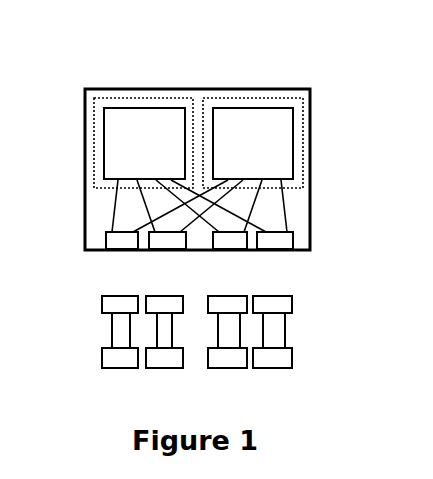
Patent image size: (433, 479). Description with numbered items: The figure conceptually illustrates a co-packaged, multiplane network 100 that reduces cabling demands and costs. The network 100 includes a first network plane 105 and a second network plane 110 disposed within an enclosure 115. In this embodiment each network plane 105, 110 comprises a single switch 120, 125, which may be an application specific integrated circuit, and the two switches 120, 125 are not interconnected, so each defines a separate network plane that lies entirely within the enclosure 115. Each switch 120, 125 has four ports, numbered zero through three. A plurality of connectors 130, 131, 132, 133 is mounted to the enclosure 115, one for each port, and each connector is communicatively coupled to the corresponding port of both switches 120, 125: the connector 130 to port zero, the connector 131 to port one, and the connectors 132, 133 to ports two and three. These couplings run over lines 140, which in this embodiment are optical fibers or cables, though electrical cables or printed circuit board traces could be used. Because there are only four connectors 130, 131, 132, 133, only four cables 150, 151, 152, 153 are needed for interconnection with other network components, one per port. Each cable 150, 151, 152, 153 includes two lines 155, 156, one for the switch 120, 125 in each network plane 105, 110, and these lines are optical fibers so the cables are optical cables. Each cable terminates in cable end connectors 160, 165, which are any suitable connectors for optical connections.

The co-packaged, multiplane network 100 is at (115, 42).
The enclosure 115 is at (86, 88).
The first network plane 105 is at (95, 147).
The second network plane 110 is at (303, 145).
The switch 120 is at (128, 138).
The switch 125 is at (236, 138).
The connector 130 is at (106, 232).
The connector 131 is at (165, 251).
The connector 132 is at (230, 251).
The connector 133 is at (293, 232).
The lines 140 is at (282, 201).
The cable 150 is at (87, 338).
The cable 151 is at (165, 387).
The cable 152 is at (229, 388).
The cable 153 is at (291, 379).
The line 155 is at (112, 327).
The line 156 is at (135, 351).
The cable end connector 160 is at (102, 297).
The cable end connector 165 is at (102, 368).